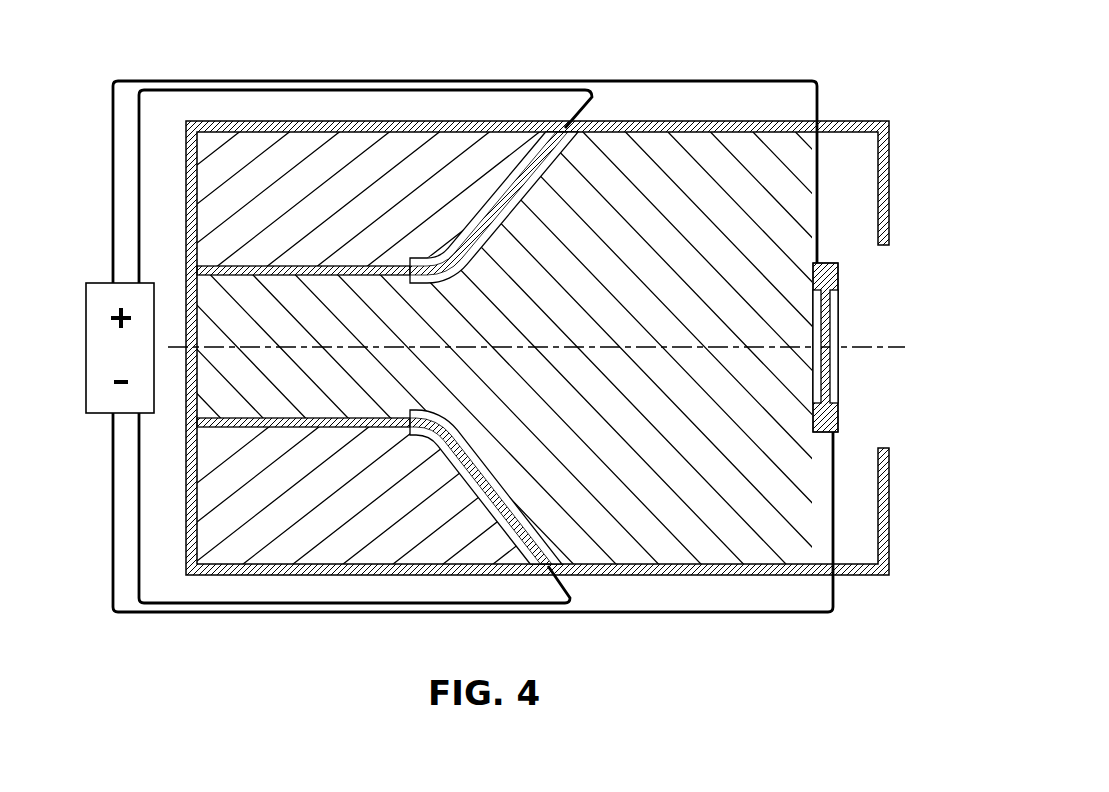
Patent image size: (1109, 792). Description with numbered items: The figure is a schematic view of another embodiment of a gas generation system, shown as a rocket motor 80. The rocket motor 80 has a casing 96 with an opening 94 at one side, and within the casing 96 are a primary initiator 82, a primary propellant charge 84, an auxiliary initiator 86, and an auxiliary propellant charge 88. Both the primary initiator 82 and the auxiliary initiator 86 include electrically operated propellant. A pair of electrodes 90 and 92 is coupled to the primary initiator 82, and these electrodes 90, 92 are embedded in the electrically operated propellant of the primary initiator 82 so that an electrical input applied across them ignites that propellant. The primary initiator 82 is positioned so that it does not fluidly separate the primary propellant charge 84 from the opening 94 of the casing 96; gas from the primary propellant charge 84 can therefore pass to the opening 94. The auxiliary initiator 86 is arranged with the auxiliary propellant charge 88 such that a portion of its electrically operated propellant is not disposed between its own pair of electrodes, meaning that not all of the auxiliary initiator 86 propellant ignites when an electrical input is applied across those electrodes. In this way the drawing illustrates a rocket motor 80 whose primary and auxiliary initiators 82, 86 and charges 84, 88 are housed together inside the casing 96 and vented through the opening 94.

The rocket motor 80 is at (852, 72).
The primary initiator 82 is at (843, 262).
The primary propellant charge 84 is at (659, 244).
The auxiliary initiator 86 is at (506, 179).
The auxiliary propellant charge 88 is at (376, 186).
The electrode 90 is at (820, 322).
The electrode 92 is at (835, 371).
The opening 94 is at (893, 269).
The casing 96 is at (857, 120).